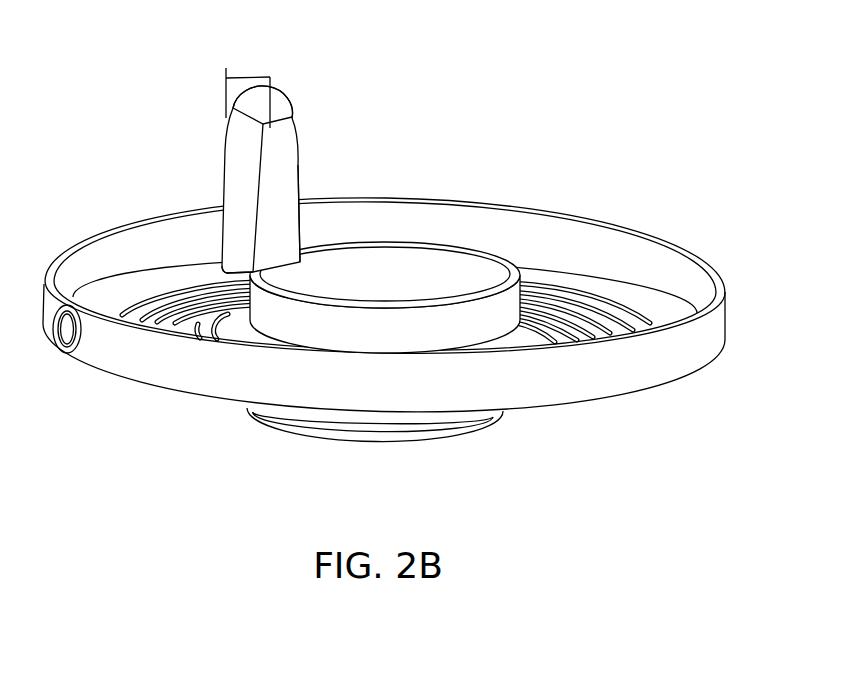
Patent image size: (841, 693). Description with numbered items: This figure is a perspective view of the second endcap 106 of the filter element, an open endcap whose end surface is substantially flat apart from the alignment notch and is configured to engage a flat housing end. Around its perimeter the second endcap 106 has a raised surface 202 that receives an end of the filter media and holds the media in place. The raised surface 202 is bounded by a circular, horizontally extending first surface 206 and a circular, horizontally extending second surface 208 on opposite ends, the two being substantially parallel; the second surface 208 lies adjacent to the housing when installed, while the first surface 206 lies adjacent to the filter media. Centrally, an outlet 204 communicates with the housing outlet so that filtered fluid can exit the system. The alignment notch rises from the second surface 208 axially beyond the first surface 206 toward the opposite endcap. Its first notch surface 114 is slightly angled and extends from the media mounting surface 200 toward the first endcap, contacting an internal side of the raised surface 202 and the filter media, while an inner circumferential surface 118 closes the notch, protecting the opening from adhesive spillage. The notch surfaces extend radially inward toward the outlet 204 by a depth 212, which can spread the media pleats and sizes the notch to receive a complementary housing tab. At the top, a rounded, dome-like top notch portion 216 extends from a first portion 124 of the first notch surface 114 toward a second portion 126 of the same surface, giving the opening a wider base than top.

The second endcap 106 is at (148, 74).
The first notch surface 114 is at (265, 147).
The inner circumferential surface 118 is at (283, 155).
The first portion 124 is at (232, 198).
The second portion 126 is at (298, 193).
The media mounting surface 200 is at (392, 319).
The raised surface 202 is at (173, 360).
The outlet 204 is at (465, 435).
The first surface 206 is at (615, 221).
The second surface 208 is at (625, 390).
The depth 212 is at (238, 77).
The top notch portion 216 is at (275, 110).